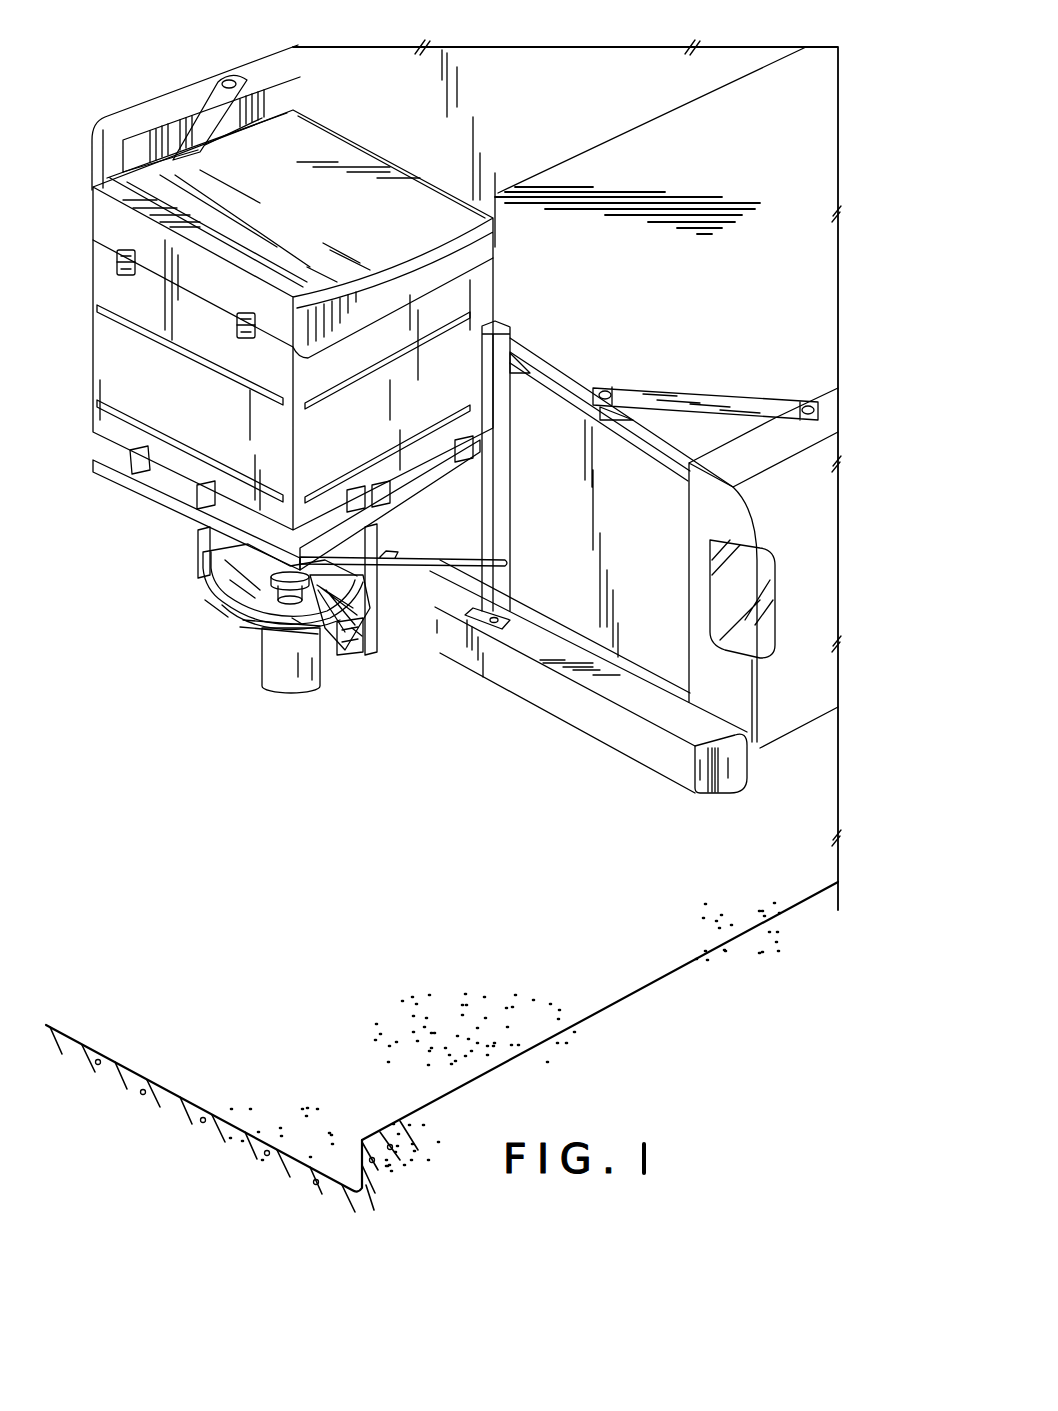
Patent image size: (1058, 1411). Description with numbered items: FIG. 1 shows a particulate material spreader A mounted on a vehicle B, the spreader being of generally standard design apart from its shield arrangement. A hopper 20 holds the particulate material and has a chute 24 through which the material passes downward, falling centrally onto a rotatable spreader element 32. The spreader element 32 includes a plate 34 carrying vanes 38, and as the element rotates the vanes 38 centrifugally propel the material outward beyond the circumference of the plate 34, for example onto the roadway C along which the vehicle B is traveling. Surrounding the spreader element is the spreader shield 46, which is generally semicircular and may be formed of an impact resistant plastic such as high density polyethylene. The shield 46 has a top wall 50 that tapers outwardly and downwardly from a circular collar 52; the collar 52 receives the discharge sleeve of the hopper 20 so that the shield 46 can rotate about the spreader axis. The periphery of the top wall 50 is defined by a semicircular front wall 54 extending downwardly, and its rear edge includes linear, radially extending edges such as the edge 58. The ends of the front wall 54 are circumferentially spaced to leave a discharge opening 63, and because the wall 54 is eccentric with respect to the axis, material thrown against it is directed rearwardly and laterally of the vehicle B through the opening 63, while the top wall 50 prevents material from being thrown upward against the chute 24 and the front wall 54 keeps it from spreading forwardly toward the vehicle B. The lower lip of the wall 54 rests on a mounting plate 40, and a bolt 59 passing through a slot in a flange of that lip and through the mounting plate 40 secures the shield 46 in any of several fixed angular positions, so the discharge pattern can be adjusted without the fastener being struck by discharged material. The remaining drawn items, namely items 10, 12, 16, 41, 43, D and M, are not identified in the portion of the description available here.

The truck / vehicle bed 10 is at (700, 341).
The bed side beam 12 is at (617, 738).
The vertical support post 16 is at (511, 482).
The hopper 20 is at (88, 330).
The chute 24 is at (370, 536).
The spreader element 32 is at (253, 623).
The plate 34 is at (243, 630).
The vanes 38 is at (297, 620).
The mounting plate 40 is at (227, 610).
The mounting plate 41 is at (380, 615).
The support bracket 43 is at (207, 531).
The spreader shield 46 is at (233, 573).
The top wall 50 is at (340, 575).
The circular collar 52 is at (287, 587).
The front wall 54 is at (373, 617).
The radially extending edge 58 is at (297, 622).
The bolt 59 is at (358, 632).
The discharge opening 63 is at (227, 615).
The spreader A is at (250, 652).
The vehicle B is at (250, 52).
The roadway C is at (430, 954).
The ground edge D is at (641, 1011).
The motor M is at (283, 687).